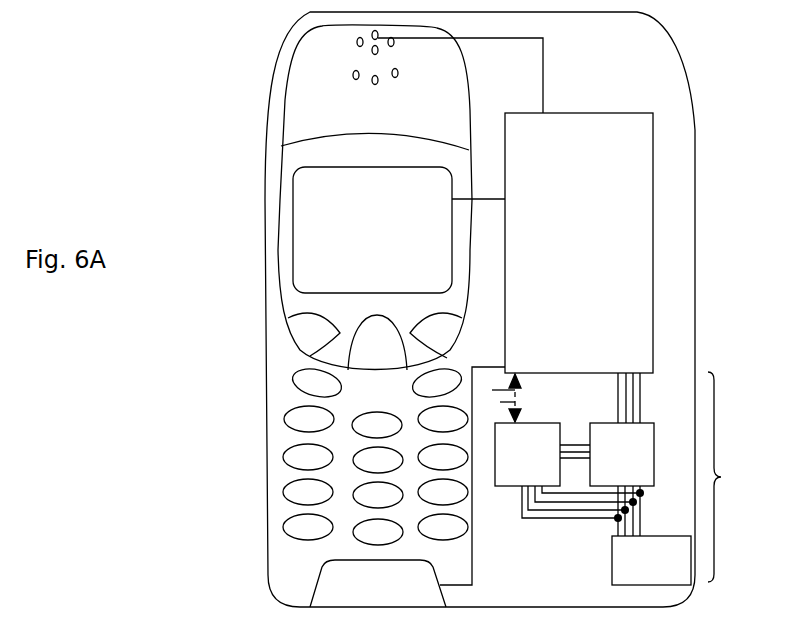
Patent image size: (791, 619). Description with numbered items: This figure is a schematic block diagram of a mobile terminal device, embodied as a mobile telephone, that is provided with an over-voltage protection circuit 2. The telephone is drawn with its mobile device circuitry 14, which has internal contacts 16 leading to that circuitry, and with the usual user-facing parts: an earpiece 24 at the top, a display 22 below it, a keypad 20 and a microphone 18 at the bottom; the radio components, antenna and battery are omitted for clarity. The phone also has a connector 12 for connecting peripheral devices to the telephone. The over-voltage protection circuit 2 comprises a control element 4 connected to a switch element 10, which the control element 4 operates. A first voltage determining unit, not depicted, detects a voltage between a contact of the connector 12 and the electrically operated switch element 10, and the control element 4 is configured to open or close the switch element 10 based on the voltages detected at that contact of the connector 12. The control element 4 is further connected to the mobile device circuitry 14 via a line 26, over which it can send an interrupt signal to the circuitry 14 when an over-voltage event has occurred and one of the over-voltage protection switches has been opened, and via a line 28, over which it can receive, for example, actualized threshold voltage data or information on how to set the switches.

The over-voltage protection circuit 2 is at (731, 477).
The control element 4 is at (527, 454).
The switch element 10 is at (622, 454).
The connector 12 is at (651, 560).
The mobile device circuitry 14 is at (579, 243).
The internal contacts 16 is at (628, 384).
The microphone 18 is at (378, 583).
The keypad 20 is at (505, 353).
The display 22 is at (372, 230).
The earpiece 24 is at (375, 58).
The line 26 is at (500, 402).
The line 28 is at (492, 390).